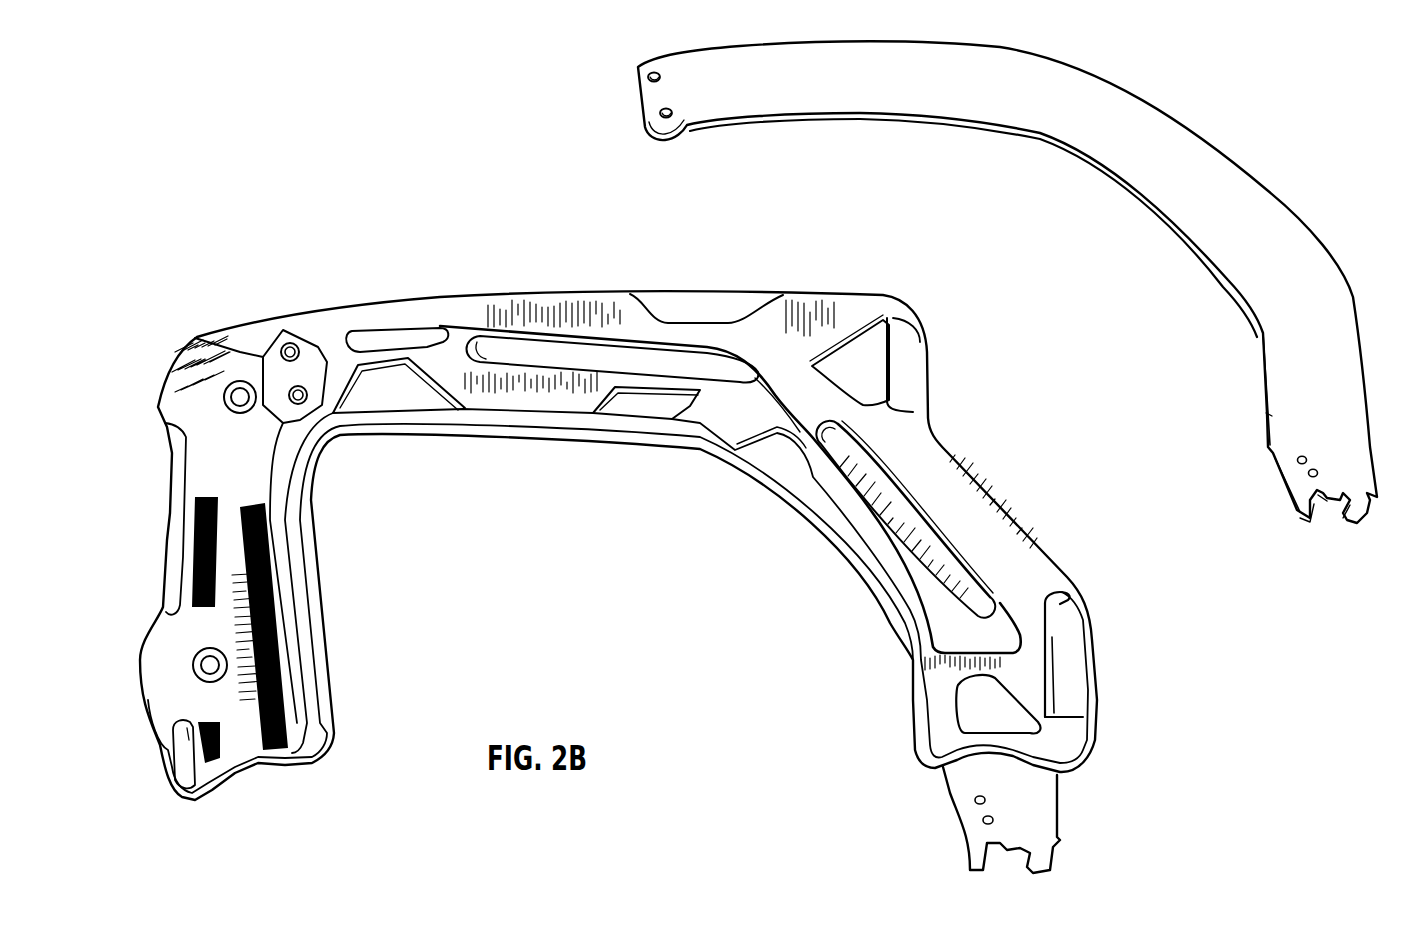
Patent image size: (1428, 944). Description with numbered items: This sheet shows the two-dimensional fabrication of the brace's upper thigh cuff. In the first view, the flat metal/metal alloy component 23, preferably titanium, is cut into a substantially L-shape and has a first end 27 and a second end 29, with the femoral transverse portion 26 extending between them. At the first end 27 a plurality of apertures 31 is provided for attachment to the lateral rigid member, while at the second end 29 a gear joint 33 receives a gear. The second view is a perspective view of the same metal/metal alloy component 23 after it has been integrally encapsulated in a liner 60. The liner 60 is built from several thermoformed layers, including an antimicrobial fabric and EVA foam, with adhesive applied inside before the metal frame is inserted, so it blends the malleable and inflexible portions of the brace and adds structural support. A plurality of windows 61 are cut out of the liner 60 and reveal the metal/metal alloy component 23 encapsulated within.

In FIG. 2A, the metal/metal alloy component 23 is at (1000, 304).
In FIG. 2B, the metal/metal alloy component 23 is at (955, 775).
In FIG. 2A, the femoral transverse portion 26 is at (1133, 176).
In FIG. 2A, the first end 27 is at (683, 62).
In FIG. 2A, the second end 29 is at (1355, 461).
In FIG. 2A, the apertures 31 is at (641, 70).
In FIG. 2A, the gear joint 33 is at (1315, 512).
In FIG. 2B, the liner 60 is at (790, 495).
In FIG. 2B, the windows 61 is at (395, 332).